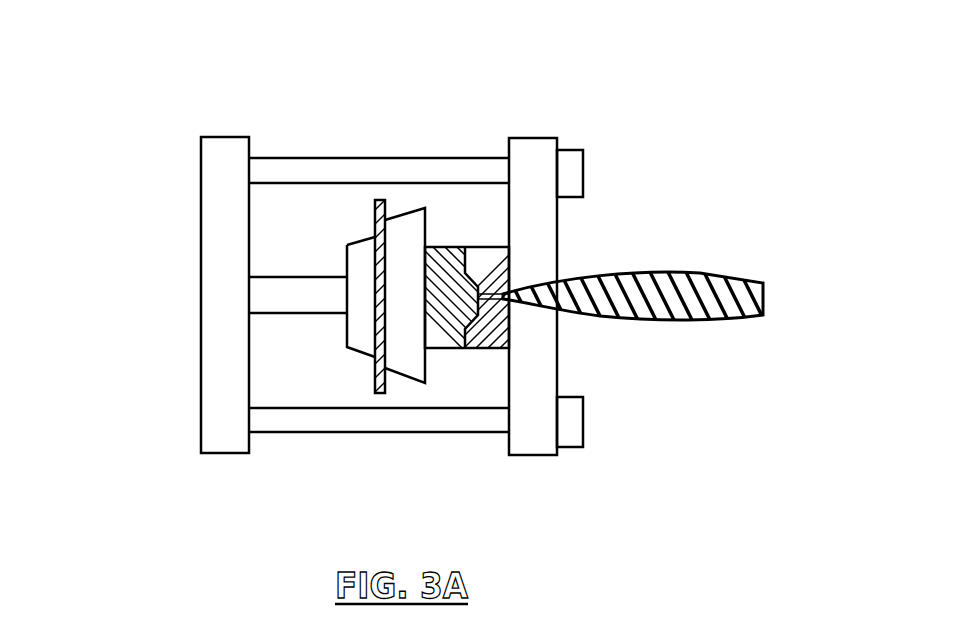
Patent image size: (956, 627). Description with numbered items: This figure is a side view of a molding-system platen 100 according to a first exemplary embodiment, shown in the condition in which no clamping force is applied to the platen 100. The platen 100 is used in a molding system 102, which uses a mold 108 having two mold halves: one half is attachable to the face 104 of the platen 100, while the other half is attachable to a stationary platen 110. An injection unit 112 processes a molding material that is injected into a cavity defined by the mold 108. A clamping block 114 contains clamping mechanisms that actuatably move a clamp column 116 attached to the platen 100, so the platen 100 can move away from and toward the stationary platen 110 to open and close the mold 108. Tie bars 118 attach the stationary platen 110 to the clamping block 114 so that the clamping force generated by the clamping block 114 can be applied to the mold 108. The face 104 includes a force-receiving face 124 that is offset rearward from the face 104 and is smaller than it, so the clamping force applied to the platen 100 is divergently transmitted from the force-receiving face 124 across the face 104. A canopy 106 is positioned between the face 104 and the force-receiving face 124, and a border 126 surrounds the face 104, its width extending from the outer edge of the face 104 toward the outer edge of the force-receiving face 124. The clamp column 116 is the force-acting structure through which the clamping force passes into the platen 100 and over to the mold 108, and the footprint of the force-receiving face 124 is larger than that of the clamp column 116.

The molding-system platen 100 is at (404, 202).
The molding system 102 is at (755, 123).
The face 104 is at (432, 224).
The canopy 106 is at (374, 214).
The mold 108 is at (475, 370).
The stationary platen 110 is at (545, 232).
The injection unit 112 is at (713, 289).
The clamping block 114 is at (217, 287).
The clamp column 116 is at (285, 300).
The tie bars 118 is at (307, 165).
The force-receiving face 124 is at (343, 325).
The border 126 is at (437, 368).